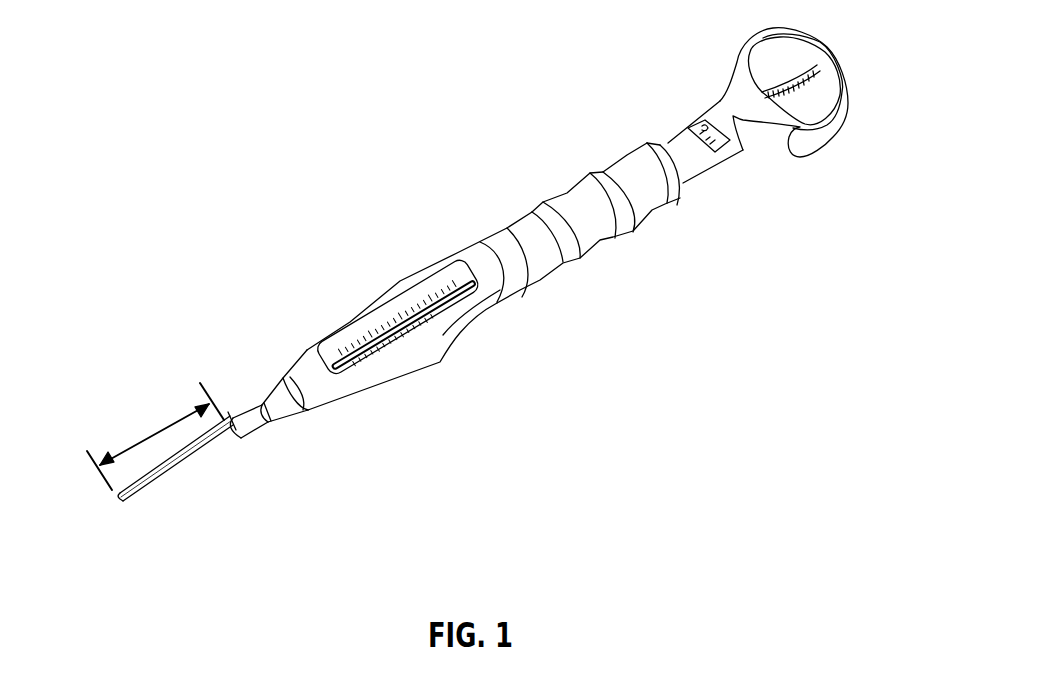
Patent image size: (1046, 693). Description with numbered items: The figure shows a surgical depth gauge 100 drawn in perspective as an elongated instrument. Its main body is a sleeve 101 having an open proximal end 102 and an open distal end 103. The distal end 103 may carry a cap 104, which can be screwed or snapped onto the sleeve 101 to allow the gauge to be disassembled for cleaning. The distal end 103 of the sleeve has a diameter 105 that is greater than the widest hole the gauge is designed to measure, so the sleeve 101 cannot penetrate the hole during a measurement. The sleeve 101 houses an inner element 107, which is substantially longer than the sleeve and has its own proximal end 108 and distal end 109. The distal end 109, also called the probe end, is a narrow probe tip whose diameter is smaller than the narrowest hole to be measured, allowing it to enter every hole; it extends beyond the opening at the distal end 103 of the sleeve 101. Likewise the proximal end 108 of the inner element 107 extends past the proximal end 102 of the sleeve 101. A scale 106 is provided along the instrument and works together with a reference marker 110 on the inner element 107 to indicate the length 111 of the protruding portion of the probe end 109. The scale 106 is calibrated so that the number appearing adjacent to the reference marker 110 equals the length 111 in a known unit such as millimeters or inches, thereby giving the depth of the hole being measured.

The surgical depth gauge 100 is at (486, 219).
The sleeve 101 is at (543, 255).
The proximal end 102 is at (680, 181).
The distal end 103 is at (243, 430).
The cap 104 is at (278, 389).
The diameter 105 is at (247, 420).
The scale 106 is at (402, 298).
The inner element 107 is at (360, 367).
The proximal end 108 is at (745, 133).
The distal end 109 is at (133, 499).
The reference marker 110 is at (420, 333).
The length 111 is at (140, 455).